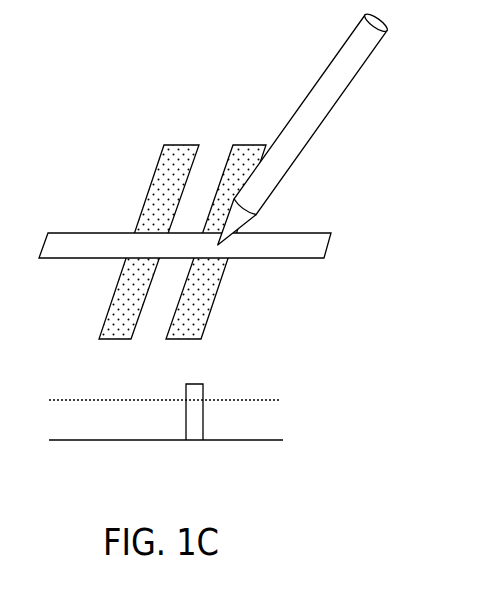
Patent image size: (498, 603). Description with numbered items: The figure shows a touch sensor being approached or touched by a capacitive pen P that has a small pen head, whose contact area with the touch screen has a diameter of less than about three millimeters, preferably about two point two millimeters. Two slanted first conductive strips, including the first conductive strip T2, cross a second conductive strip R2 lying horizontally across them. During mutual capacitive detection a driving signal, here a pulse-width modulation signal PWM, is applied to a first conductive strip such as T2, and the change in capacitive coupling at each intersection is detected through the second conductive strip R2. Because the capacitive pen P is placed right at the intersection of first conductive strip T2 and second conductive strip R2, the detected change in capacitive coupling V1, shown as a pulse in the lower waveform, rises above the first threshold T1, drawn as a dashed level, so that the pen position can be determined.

The first threshold T1 is at (165, 157).
The first conductive strip T2 is at (238, 157).
The second conductive strip R2 is at (308, 237).
The capacitive pen P is at (328, 67).
The pulse-width modulation signal PWM is at (249, 128).
The change in capacitive coupling V1 is at (166, 428).